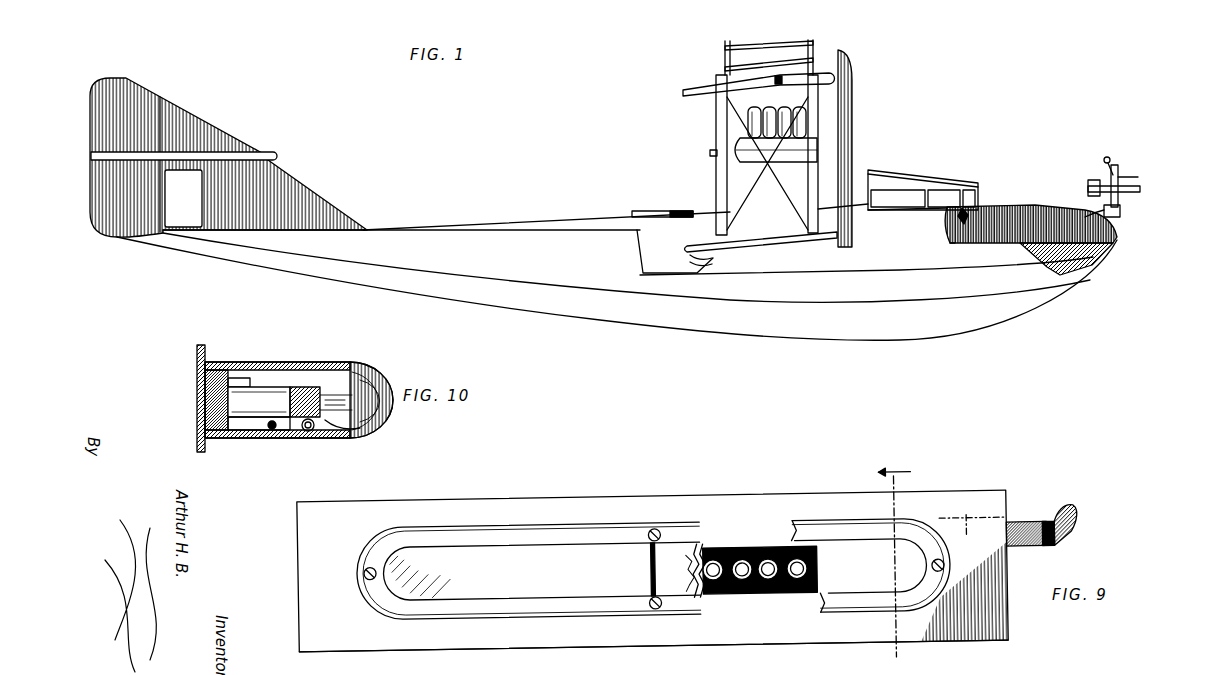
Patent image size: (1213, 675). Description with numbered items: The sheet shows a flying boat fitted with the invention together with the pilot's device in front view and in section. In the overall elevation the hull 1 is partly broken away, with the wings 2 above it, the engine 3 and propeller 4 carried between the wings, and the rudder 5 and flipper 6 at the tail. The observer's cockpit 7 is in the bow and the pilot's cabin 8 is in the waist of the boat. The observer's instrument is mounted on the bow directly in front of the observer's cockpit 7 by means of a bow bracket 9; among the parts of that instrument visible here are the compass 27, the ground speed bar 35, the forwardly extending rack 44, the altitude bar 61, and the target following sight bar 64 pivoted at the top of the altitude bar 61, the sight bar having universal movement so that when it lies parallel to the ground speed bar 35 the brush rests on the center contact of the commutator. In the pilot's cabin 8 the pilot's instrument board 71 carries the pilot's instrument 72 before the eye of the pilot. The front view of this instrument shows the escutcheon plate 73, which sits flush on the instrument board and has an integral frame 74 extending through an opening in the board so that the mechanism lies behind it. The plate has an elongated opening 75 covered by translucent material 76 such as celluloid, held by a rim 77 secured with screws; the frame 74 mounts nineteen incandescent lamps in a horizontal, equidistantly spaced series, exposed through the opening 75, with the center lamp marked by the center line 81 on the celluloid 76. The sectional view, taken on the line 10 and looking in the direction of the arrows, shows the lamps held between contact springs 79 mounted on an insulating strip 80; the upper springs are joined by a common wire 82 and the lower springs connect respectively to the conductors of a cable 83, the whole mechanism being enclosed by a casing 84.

In FIG. 1, the hull 1 is at (1103, 277).
In FIG. 1, the wings 2 is at (687, 92).
In FIG. 1, the engine 3 is at (780, 113).
In FIG. 1, the propeller 4 is at (855, 116).
In FIG. 1, the rudder 5 is at (148, 240).
In FIG. 1, the flipper 6 is at (268, 153).
In FIG. 1, the observer's cockpit 7 is at (1050, 207).
In FIG. 1, the pilot's cabin 8 is at (953, 182).
In FIG. 1, the bow bracket 9 is at (1120, 221).
In FIG. 9, the section line 10— 10 is at (895, 552).
In FIG. 1, the compass 27 is at (1094, 180).
In FIG. 1, the ground speed bar 35 is at (1140, 185).
In FIG. 1, the forwardly extending rack 44 is at (1119, 197).
In FIG. 1, the altitude bar 61 is at (1120, 171).
In FIG. 1, the target following sight bar 64 is at (1110, 158).
In FIG. 1, the pilot's instrument board 71 is at (983, 210).
In FIG. 1, the pilot's instrument 72 is at (983, 243).
In FIG. 10, the pilot's instrument 72 is at (338, 358).
In FIG. 9, the pilot's instrument 72 is at (1010, 629).
In FIG. 10, the escutcheon plate 73 is at (200, 453).
In FIG. 9, the escutcheon plate 73 is at (880, 646).
In FIG. 10, the frame 74 is at (236, 364).
In FIG. 9, the elongated opening 75 is at (773, 598).
In FIG. 10, the translucent material 76 is at (200, 398).
In FIG. 9, the translucent material 76 is at (685, 588).
In FIG. 10, the rim 77 is at (195, 427).
In FIG. 9, the rim 77 is at (628, 616).
In FIG. 10, the contact springs 79 is at (278, 387).
In FIG. 10, the insulating strip 80 is at (368, 372).
In FIG. 9, the center line 81 is at (645, 570).
In FIG. 10, the common wire 82 is at (396, 384).
In FIG. 10, the cable 83 is at (383, 430).
In FIG. 9, the cable 83 is at (1063, 538).
In FIG. 10, the casing 84 is at (402, 391).